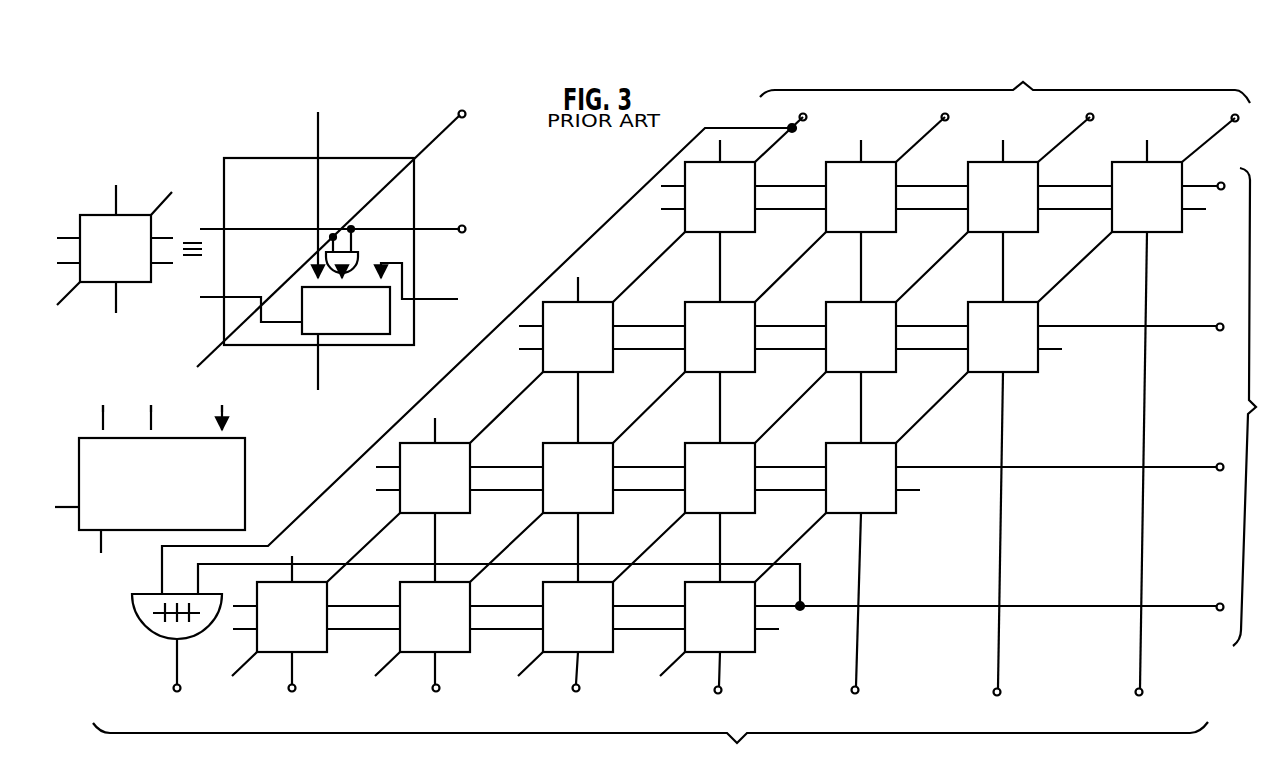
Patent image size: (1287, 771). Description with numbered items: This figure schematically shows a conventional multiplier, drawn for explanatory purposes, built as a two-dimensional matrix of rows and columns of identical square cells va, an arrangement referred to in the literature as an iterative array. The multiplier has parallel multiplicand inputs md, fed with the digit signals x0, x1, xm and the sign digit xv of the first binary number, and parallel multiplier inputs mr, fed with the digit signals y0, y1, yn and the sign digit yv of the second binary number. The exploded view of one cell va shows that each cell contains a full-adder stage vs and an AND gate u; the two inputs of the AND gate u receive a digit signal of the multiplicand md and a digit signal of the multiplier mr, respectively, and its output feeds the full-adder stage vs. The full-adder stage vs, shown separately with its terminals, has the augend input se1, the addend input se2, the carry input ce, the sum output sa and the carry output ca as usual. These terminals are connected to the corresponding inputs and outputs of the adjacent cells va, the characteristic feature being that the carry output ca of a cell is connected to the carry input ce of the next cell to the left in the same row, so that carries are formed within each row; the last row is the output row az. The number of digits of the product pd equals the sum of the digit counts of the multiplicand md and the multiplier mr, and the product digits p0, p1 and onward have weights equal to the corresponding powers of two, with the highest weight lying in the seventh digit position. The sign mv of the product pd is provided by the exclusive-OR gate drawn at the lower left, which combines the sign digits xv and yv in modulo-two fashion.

The cell va is at (631, 408).
The multiplicand inputs md is at (723, 211).
The multiplier inputs mr is at (742, 407).
The AND gate u is at (359, 263).
The full-adder stage vs is at (368, 334).
The addend input se2 is at (100, 435).
The augend input se1 is at (154, 435).
The carry input ce is at (222, 435).
The carry output ca is at (79, 501).
The sum output sa is at (106, 529).
The sign of the product mv is at (468, 422).
The sign digit of the first binary number xv is at (781, 130).
The digit signal xm of the first binary number xm is at (922, 130).
The digit signal x1 of the first binary number x1 is at (1066, 130).
The digit signal x0 of the first binary number x0 is at (1210, 130).
The digit signal y0 of the second binary number y0 is at (1211, 202).
The digit signal y1 of the second binary number y1 is at (1133, 342).
The digit signal yn of the second binary number yn is at (1062, 482).
The sign digit of the second binary number yv is at (990, 622).
The output row az is at (946, 635).
The product digit p1 is at (996, 548).
The product digit p0 is at (1140, 478).
The product pd is at (650, 746).